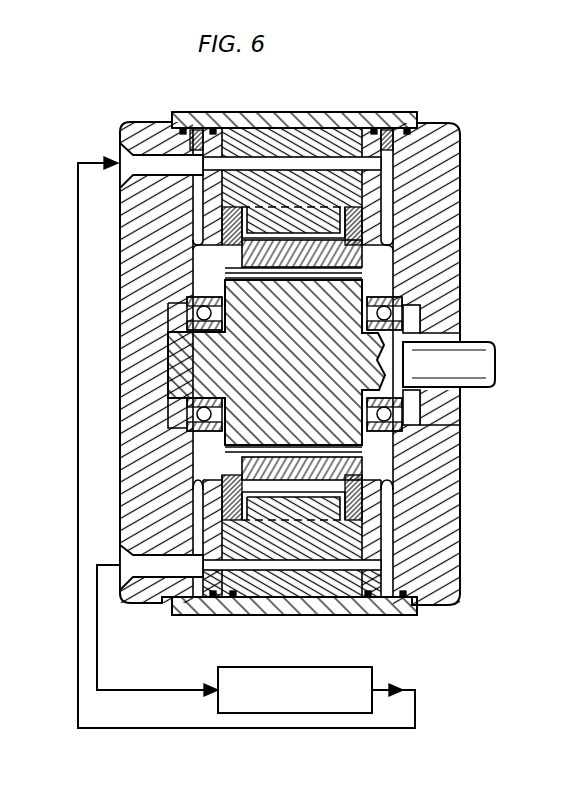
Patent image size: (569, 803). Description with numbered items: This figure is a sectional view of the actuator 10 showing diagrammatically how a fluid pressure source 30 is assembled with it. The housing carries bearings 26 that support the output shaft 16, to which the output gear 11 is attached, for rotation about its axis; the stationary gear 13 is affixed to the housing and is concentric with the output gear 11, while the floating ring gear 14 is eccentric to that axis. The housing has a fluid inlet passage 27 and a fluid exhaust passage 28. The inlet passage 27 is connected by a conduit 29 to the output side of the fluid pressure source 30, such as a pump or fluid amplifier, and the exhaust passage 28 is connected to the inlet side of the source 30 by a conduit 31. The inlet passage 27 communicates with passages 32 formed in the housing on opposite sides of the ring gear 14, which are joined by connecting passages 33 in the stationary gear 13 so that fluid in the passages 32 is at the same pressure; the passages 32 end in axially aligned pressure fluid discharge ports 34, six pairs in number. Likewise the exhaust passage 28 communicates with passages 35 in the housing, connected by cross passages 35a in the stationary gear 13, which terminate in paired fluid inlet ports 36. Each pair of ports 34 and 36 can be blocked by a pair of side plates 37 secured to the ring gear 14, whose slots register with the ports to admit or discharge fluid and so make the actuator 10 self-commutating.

The actuator 10 is at (476, 123).
The output gear 11 is at (292, 421).
The stationary gear 13 is at (383, 541).
The floating ring gear 14 is at (288, 255).
The output shaft 16 is at (482, 350).
The bearings 26 is at (188, 303).
The fluid inlet passage 27 is at (158, 162).
The fluid exhaust passage 28 is at (160, 568).
The conduit 29 is at (76, 443).
The fluid pressure source 30 is at (352, 668).
The conduit 31 is at (97, 625).
The passages 32 is at (197, 207).
The connecting passages 33 is at (287, 160).
The pressure fluid discharge ports 34 is at (200, 255).
The passages 35 is at (197, 512).
The cross passages 35a is at (262, 568).
The fluid inlet ports 36 is at (208, 478).
The side plates 37 is at (240, 208).